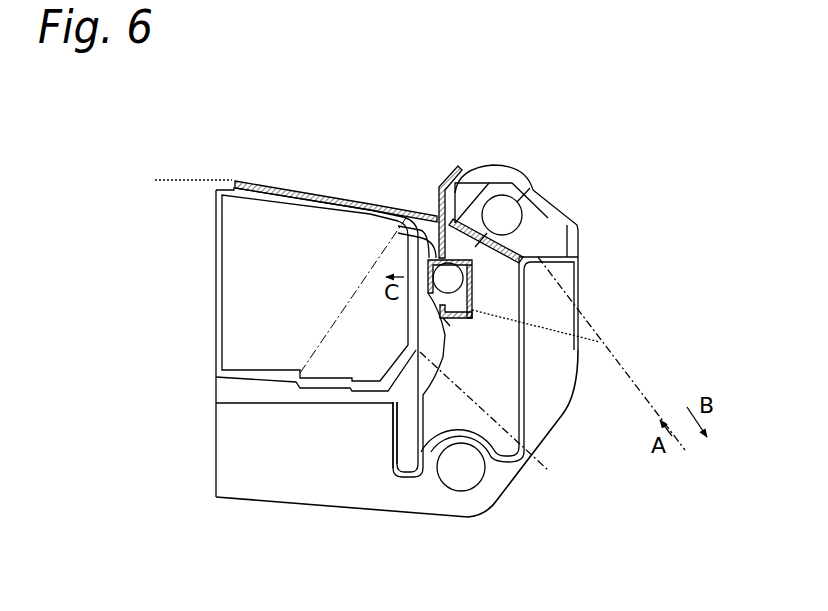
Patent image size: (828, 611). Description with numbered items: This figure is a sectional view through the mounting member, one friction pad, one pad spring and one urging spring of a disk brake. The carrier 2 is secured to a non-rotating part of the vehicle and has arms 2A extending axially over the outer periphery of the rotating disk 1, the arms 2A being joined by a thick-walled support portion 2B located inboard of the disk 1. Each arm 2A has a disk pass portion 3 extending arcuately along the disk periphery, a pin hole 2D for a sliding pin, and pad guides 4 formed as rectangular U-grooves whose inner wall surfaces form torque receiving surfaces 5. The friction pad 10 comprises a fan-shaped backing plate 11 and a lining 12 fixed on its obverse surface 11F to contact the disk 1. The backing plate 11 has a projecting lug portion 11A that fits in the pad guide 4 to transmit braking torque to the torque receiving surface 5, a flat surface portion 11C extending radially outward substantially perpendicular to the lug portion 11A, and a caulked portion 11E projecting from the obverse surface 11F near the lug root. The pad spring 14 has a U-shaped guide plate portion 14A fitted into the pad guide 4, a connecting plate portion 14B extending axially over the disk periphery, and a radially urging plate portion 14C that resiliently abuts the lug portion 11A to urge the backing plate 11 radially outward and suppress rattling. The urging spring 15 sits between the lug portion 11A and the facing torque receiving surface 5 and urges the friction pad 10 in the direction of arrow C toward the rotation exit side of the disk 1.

The rotating disk 1 is at (189, 173).
The carrier 2 is at (500, 505).
The arm 2A is at (528, 232).
The support portion 2B is at (250, 476).
The pin hole 2D is at (507, 203).
The disk pass portion 3 is at (569, 248).
The pad guide 4 is at (447, 322).
The torque receiving surface 5 is at (474, 275).
The friction pad 10 is at (208, 268).
The backing plate 11 is at (363, 392).
The lug portion 11A is at (443, 360).
The flat surface portion 11C is at (431, 224).
The caulked portion 11E is at (372, 206).
The obverse surface 11F is at (419, 385).
The lining 12 is at (275, 225).
The pad spring 14 is at (483, 298).
The guide plate portion 14A is at (473, 314).
The connecting plate portion 14B is at (443, 186).
The radially urging plate portion 14C is at (441, 316).
The urging spring 15 is at (488, 218).